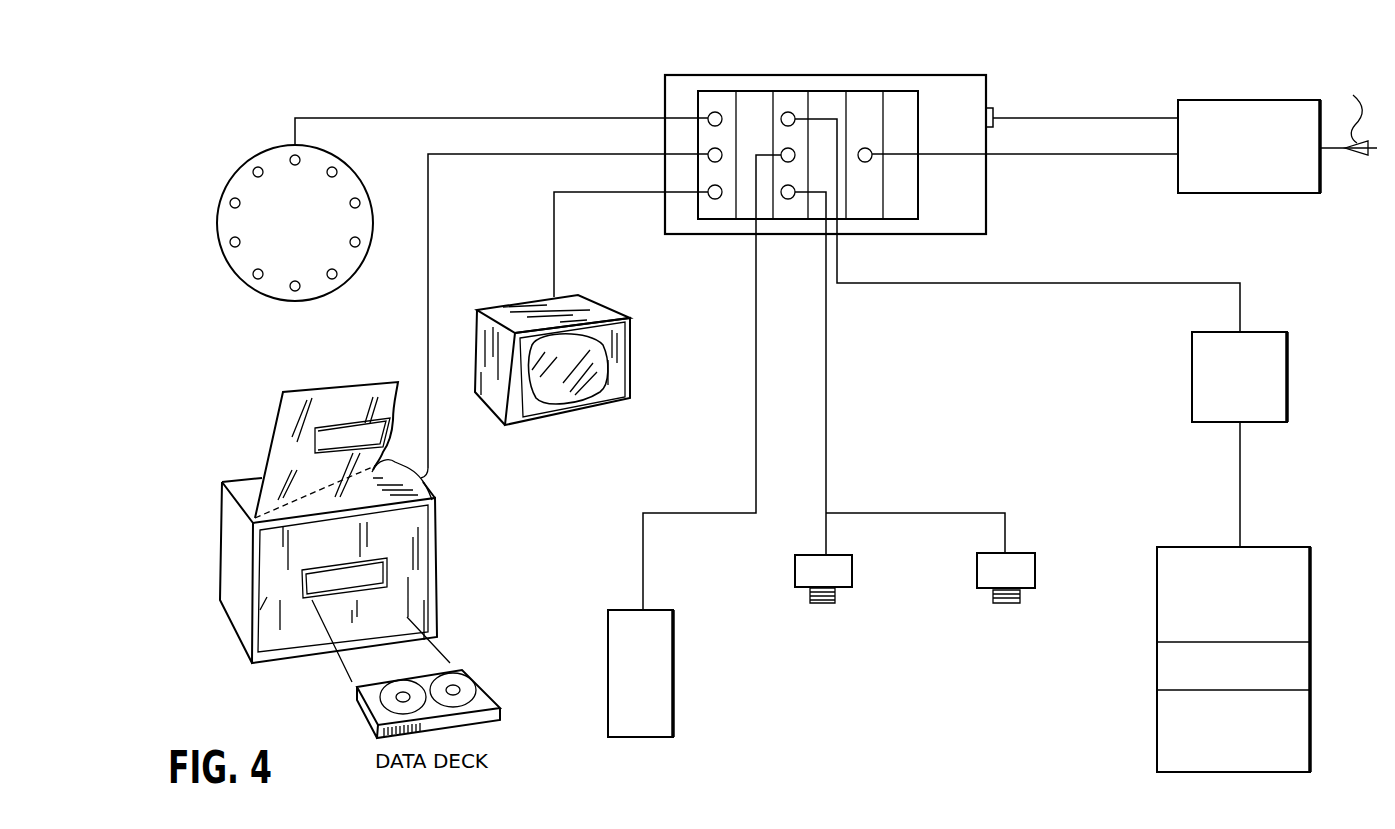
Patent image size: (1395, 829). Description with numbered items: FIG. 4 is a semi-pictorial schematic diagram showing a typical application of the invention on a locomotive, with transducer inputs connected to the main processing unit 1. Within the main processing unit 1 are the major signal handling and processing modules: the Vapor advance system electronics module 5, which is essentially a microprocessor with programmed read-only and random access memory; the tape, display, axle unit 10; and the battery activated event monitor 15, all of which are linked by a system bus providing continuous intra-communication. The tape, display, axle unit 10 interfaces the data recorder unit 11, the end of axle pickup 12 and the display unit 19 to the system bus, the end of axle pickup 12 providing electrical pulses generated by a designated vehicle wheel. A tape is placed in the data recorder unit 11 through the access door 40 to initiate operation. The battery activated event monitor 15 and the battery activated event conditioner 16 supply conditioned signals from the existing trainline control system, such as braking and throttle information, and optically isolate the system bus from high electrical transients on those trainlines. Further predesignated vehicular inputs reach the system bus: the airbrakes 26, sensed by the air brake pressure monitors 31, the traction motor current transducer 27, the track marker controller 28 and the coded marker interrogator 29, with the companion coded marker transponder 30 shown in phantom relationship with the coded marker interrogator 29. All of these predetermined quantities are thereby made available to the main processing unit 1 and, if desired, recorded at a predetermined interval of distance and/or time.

The main processing unit 1 is at (1013, 75).
The Vapor advance system electronics module 5 is at (755, 103).
The tape, display, axle unit 10 is at (715, 100).
The data recorder unit 11 is at (315, 552).
The end of axle pickup 12 is at (352, 188).
The battery activated event monitor 15 is at (863, 100).
The battery activated event conditioner 16 is at (1250, 197).
The display unit 19 is at (602, 302).
The airbrakes 26 is at (948, 287).
The traction motor current transducer 27 is at (608, 670).
The track marker controller 28 is at (1199, 430).
The coded marker interrogator 29 is at (1302, 578).
The coded marker transponder 30 is at (1303, 745).
The air brake pressure monitors 31 is at (795, 570).
The access door 40 is at (292, 412).